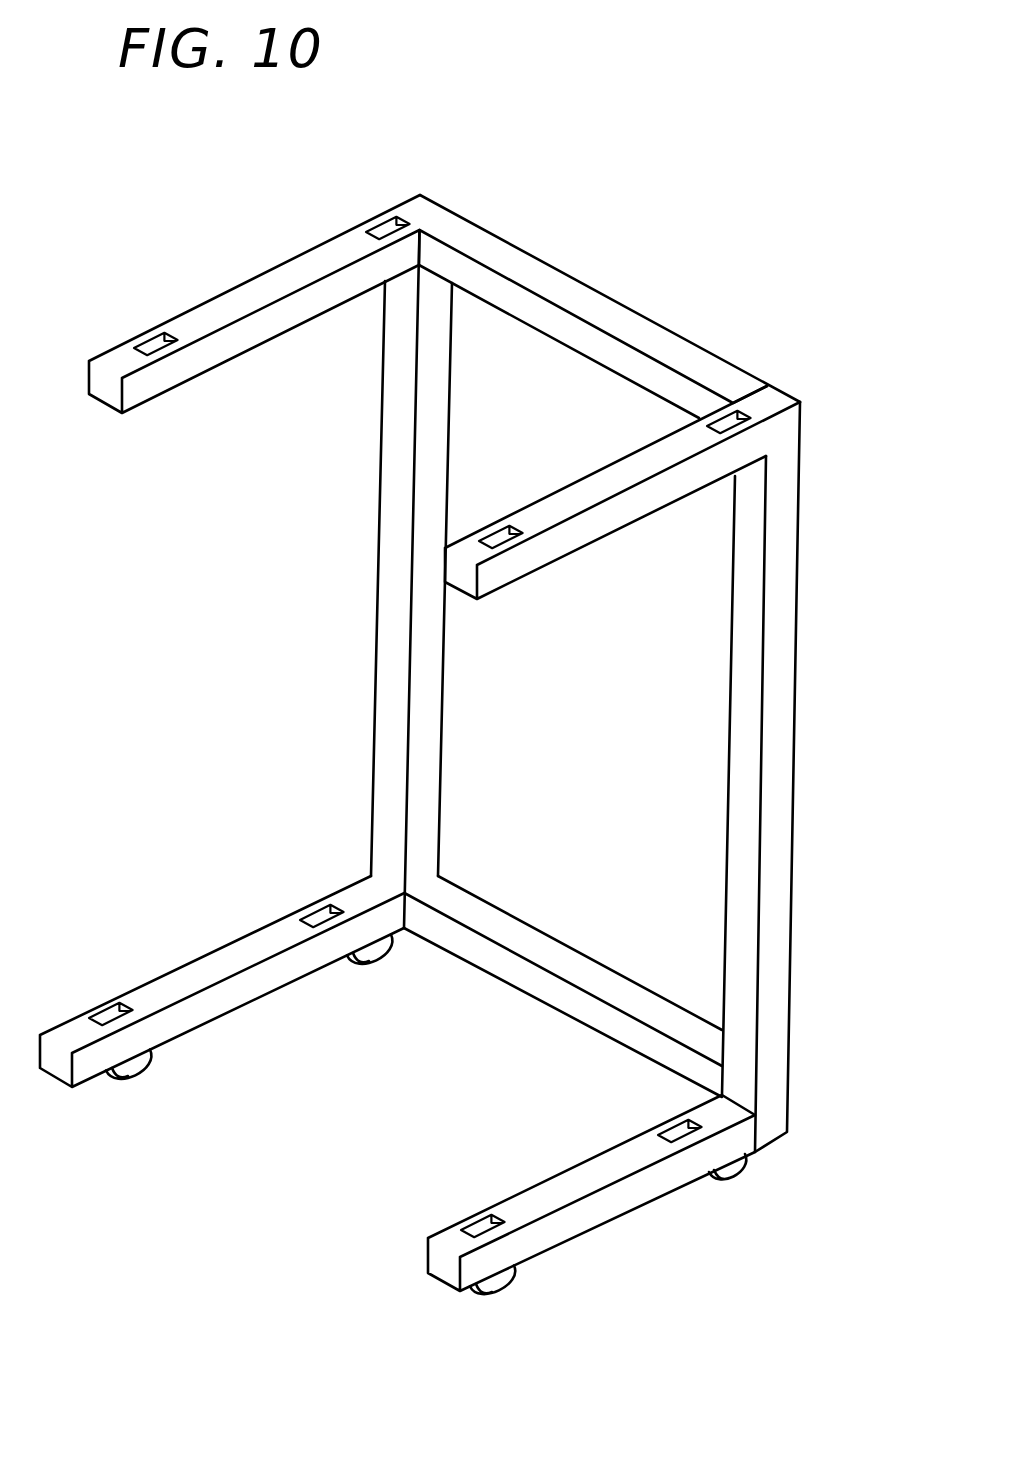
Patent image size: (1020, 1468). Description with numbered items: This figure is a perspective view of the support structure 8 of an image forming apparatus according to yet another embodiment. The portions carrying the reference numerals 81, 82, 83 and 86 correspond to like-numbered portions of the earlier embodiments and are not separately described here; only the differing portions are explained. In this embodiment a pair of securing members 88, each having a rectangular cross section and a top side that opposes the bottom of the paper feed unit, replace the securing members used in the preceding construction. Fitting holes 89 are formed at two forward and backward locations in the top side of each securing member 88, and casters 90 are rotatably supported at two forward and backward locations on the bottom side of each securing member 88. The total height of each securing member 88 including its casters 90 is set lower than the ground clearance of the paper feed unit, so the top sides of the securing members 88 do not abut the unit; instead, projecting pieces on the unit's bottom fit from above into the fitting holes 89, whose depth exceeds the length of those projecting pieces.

The support structure 8 is at (758, 263).
The upper side frame member 81 is at (250, 278).
The vertical post 82 is at (380, 508).
The horizontal connecting frame member 83 is at (622, 300).
The engagement hole 86 is at (380, 226).
The securing member 88 is at (250, 922).
The fitting hole 89 is at (318, 897).
The caster 90 is at (378, 960).